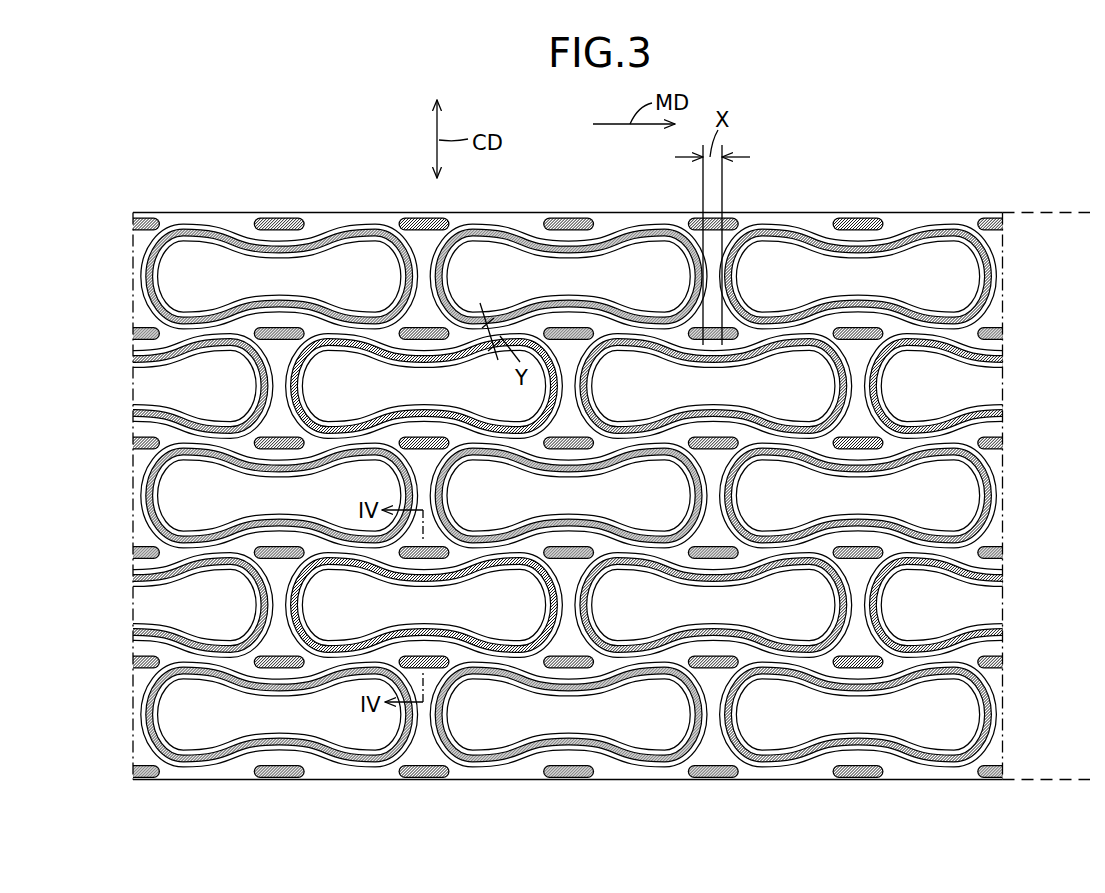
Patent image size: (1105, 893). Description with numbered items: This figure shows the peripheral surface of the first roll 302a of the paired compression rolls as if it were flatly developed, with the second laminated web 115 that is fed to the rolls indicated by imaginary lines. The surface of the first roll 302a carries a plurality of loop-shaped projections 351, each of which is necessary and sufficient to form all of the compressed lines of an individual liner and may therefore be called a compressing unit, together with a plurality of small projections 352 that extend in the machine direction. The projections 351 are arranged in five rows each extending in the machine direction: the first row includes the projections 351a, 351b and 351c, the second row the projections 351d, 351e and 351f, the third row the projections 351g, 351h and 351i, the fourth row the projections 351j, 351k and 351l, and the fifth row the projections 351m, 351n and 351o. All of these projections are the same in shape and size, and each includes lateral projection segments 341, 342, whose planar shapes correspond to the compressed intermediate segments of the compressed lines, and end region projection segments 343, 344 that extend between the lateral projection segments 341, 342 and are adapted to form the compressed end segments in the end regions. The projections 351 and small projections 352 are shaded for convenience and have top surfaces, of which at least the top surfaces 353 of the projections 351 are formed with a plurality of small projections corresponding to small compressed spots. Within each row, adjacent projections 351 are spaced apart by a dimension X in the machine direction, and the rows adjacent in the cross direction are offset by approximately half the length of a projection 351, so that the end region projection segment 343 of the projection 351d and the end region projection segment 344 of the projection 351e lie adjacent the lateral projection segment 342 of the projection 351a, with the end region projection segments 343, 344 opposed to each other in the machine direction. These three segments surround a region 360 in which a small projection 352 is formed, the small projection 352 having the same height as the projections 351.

The loop-shaped projection 351 is at (510, 249).
The projection 351a is at (360, 223).
The projection 351b is at (643, 223).
The projection 351c is at (938, 223).
The projection 351d is at (144, 355).
The projection 351e is at (316, 355).
The projection 351f is at (730, 354).
The projection 351g is at (177, 458).
The projection 351h is at (498, 457).
The projection 351i is at (776, 458).
The projection 351j is at (153, 568).
The projection 351k is at (375, 567).
The projection 351l is at (655, 565).
The projection 351m is at (183, 677).
The projection 351n is at (493, 677).
The projection 351o is at (757, 677).
The lateral projection segment 341 is at (235, 228).
The lateral projection segment 342 is at (258, 318).
The end region projection segment 343 is at (405, 258).
The end region projection segment 344 is at (152, 268).
The small projection 352 is at (285, 218).
The top surface 353 is at (776, 230).
The region 360 is at (427, 318).
The first roll 302a is at (946, 150).
The second laminated web 115 is at (1018, 210).